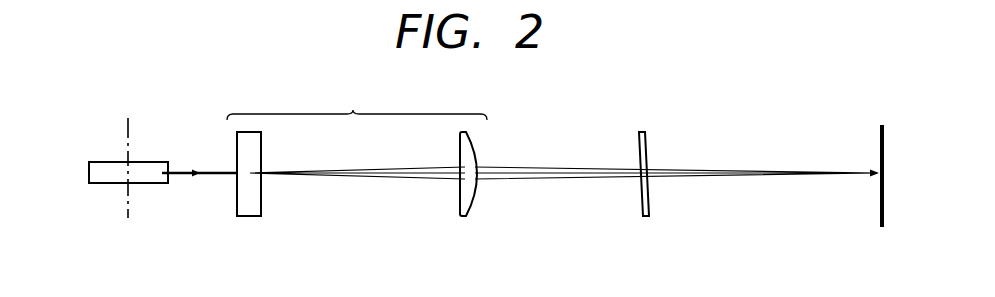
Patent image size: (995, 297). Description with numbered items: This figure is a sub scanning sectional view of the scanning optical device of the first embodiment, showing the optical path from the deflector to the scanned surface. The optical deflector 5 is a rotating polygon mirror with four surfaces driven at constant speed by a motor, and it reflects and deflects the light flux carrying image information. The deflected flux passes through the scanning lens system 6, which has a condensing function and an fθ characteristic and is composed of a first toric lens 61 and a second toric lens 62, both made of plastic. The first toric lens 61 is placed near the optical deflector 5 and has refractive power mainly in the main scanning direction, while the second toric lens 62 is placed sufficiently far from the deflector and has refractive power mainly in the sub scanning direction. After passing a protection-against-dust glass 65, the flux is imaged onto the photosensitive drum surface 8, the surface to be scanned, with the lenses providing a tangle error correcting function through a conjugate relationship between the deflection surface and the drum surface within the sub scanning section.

The optical deflector 5 is at (111, 177).
The scanning lens system 6 is at (377, 169).
The first toric lens 61 is at (254, 204).
The second toric lens 62 is at (466, 208).
The protection-against-dust glass 65 is at (647, 205).
The photosensitive drum surface 8 is at (880, 205).